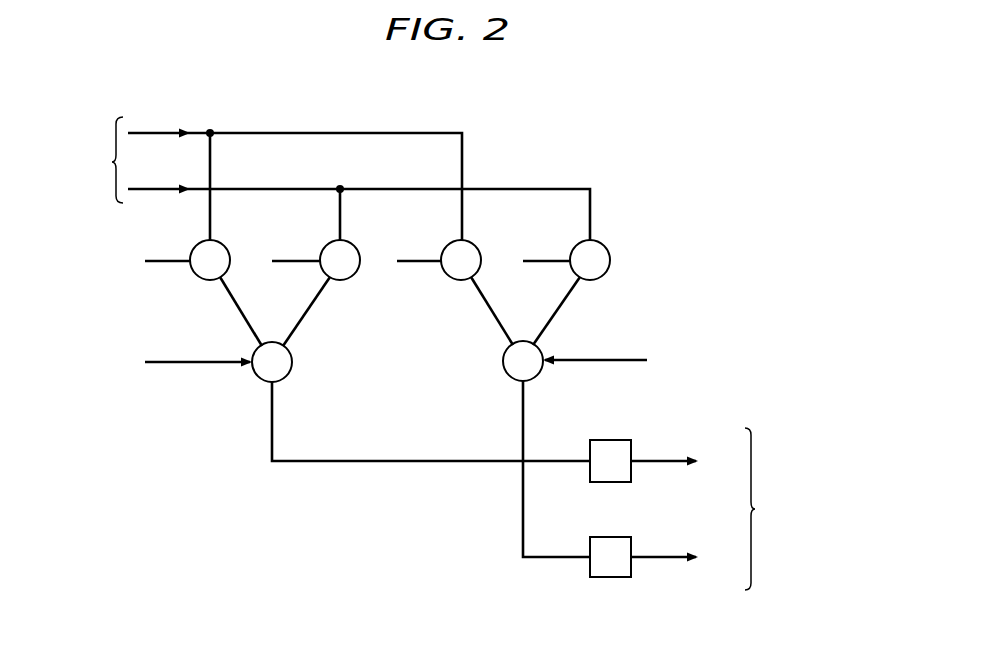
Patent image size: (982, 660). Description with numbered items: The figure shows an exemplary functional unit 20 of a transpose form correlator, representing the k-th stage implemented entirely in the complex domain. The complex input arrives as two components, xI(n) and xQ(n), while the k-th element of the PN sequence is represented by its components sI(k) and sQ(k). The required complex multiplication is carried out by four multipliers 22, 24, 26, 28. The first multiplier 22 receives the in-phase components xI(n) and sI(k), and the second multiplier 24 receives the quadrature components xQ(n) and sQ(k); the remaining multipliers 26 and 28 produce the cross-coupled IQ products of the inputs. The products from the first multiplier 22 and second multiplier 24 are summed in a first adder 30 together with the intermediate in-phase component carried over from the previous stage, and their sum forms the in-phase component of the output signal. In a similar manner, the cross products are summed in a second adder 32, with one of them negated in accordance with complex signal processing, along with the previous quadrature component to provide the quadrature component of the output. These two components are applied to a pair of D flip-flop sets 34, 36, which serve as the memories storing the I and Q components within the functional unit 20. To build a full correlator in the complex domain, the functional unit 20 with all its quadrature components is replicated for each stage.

The functional unit 20 is at (466, 93).
The first multiplier 22 is at (197, 275).
The second multiplier 24 is at (355, 275).
The multiplier 26 is at (452, 278).
The multiplier 28 is at (604, 246).
The first adder 30 is at (292, 365).
The second adder 32 is at (503, 363).
The D flip-flop set 34 is at (612, 440).
The D flip-flop set 36 is at (610, 577).